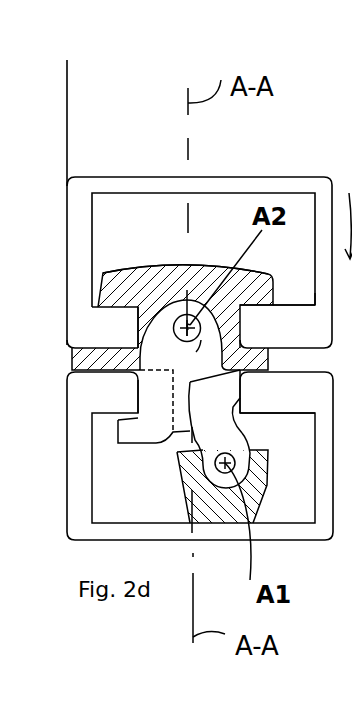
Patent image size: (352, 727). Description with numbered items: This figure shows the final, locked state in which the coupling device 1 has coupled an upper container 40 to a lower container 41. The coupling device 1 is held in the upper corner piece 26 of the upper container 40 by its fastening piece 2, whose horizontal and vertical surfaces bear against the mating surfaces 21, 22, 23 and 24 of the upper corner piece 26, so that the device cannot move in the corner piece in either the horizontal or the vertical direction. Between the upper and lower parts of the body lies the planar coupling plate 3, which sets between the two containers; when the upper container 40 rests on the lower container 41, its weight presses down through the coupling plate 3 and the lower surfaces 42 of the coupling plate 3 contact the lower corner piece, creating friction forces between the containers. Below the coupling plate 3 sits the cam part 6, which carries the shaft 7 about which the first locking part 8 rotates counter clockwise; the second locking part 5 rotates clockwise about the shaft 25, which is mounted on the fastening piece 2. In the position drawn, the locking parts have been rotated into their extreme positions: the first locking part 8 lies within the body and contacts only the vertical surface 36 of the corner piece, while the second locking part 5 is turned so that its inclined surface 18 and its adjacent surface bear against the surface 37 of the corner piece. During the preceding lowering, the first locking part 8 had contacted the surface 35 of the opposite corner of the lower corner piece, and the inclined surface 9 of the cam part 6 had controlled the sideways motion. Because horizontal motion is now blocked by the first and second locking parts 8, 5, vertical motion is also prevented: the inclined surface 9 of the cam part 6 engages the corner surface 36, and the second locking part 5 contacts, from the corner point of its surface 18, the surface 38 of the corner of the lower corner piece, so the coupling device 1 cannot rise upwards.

The upper container 40 is at (67, 108).
The upper corner piece 26 is at (192, 183).
The coupling device 1 is at (206, 251).
The fastening piece 2 is at (176, 306).
The mating surface 24 is at (99, 290).
The mating surface 22 is at (137, 327).
The shaft 25 is at (184, 335).
The mating surface 21 is at (240, 323).
The mating surface 23 is at (265, 307).
The coupling plate 3 is at (72, 362).
The lower surface of the coupling plate 42 is at (242, 368).
The lower container 41 is at (303, 372).
The surface of the second corner of the corner piece 35 is at (243, 380).
The surface of the corner piece 37 is at (138, 402).
The surface of the corner of the corner piece 38 is at (138, 405).
The inclined surface of the second locking part 18 is at (124, 423).
The second locking part 5 is at (133, 433).
The cam part 6 is at (183, 493).
The vertical surface of the corner piece 36 is at (235, 408).
The first locking part 8 is at (243, 398).
The inclined surface of the cam part 9 is at (250, 420).
The shaft 7 is at (232, 465).